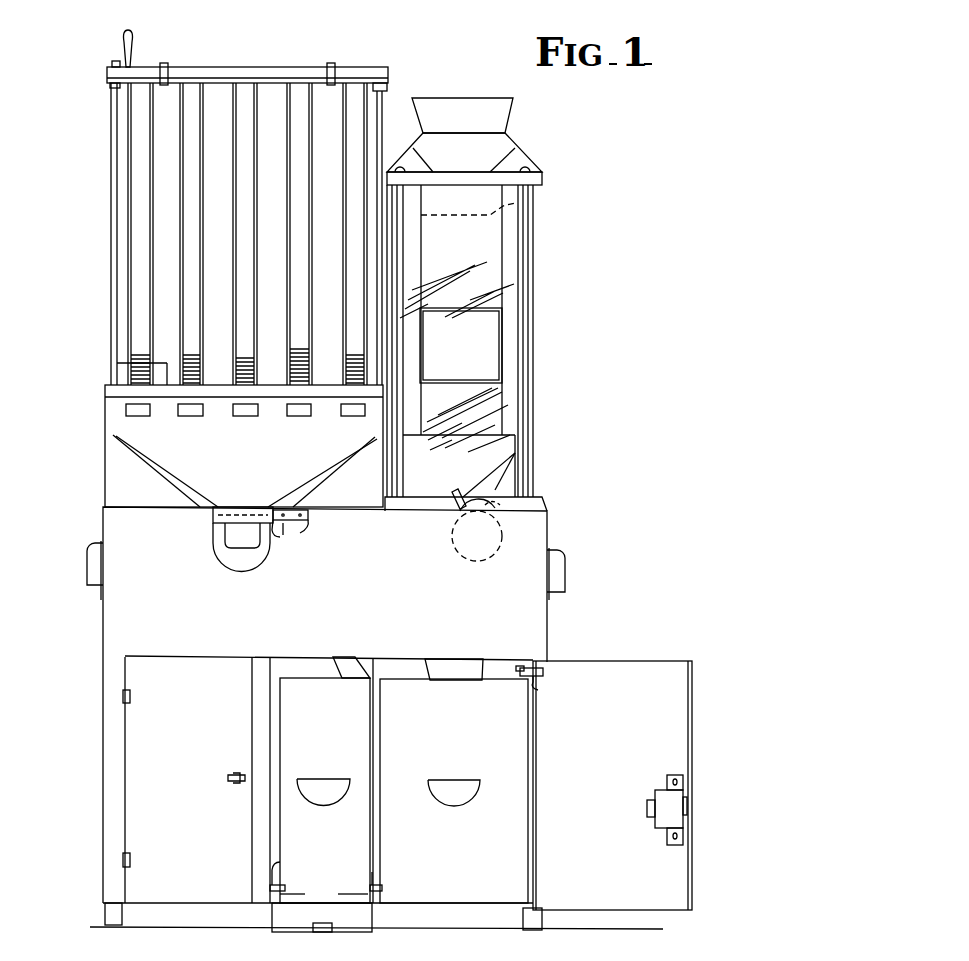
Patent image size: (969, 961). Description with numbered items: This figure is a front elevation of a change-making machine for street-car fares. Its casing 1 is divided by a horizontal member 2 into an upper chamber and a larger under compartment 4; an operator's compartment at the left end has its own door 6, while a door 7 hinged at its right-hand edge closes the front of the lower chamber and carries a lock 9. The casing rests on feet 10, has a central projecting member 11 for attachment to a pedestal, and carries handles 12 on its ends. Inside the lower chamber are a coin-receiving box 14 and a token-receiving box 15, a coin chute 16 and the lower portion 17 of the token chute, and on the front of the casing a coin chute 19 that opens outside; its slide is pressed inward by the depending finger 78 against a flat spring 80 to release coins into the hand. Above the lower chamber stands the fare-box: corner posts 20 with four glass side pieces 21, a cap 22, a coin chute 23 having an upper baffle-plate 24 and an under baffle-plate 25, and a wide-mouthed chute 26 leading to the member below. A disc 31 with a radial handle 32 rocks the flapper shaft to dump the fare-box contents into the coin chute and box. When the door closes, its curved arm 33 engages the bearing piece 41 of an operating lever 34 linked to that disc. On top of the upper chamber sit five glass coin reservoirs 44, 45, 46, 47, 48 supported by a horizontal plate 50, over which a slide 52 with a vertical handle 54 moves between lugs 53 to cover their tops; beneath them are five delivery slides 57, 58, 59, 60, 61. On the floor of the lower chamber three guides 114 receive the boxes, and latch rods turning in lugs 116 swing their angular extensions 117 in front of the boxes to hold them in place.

The casing 1 is at (325, 700).
The horizontal member 2 is at (283, 536).
The under compartment 4 is at (397, 671).
The door 6 is at (328, 779).
The door 7 is at (612, 785).
The lock 9 is at (677, 808).
The feet 10 is at (116, 921).
The projecting member 11 is at (281, 923).
The handles 12 is at (90, 570).
The coin-receiving box 14 is at (454, 791).
The token-receiving box 15 is at (321, 780).
The coin chute 16 is at (454, 669).
The lower portion of token chute 17 is at (345, 666).
The coin chute 19 is at (244, 446).
The corner posts 20 is at (522, 343).
The glass side pieces 21 is at (507, 400).
The cap 22 is at (464, 141).
The coin chute 23 is at (483, 251).
The upper baffle-plate 24 is at (521, 209).
The under baffle-plate 25 is at (471, 365).
The chute 26 is at (459, 466).
The disc 31 is at (503, 505).
The handle 32 is at (460, 492).
The curved arm 33 is at (538, 690).
The operating lever 34 is at (540, 665).
The bearing piece 41 is at (523, 667).
The coin reservoir 44 is at (134, 251).
The coin reservoir 45 is at (185, 244).
The coin reservoir 46 is at (240, 241).
The coin reservoir 47 is at (293, 240).
The coin reservoir 48 is at (350, 239).
The horizontal plate 50 is at (222, 77).
The slide 52 is at (360, 73).
The lugs 53 is at (165, 65).
The vertical handle 54 is at (130, 38).
The delivery slide 57 is at (135, 414).
The delivery slide 58 is at (189, 414).
The delivery slide 59 is at (245, 414).
The delivery slide 60 is at (300, 414).
The delivery slide 61 is at (353, 414).
The finger 78 is at (238, 540).
The flat spring 80 is at (298, 522).
The guides 114 is at (530, 893).
The lugs 116 is at (371, 880).
The angular extension 117 is at (290, 883).